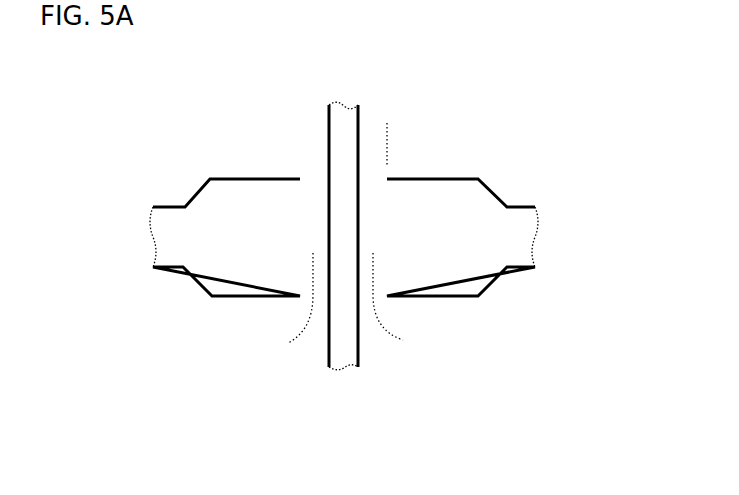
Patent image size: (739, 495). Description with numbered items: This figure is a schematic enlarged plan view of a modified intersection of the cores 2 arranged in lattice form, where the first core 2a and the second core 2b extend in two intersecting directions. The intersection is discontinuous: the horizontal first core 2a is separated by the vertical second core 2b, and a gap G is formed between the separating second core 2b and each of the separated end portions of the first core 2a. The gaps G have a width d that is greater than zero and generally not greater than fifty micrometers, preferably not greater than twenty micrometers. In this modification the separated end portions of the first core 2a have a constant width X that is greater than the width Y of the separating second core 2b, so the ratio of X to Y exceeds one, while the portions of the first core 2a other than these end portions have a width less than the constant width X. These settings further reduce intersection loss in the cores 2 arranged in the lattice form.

The first core 2a is at (225, 208).
The second core 2b is at (340, 165).
The cores 2 is at (462, 237).
The gap G is at (344, 312).
The width of the gaps d is at (315, 137).
The width of the separated first core X is at (493, 179).
The width of the separating second core Y is at (403, 412).